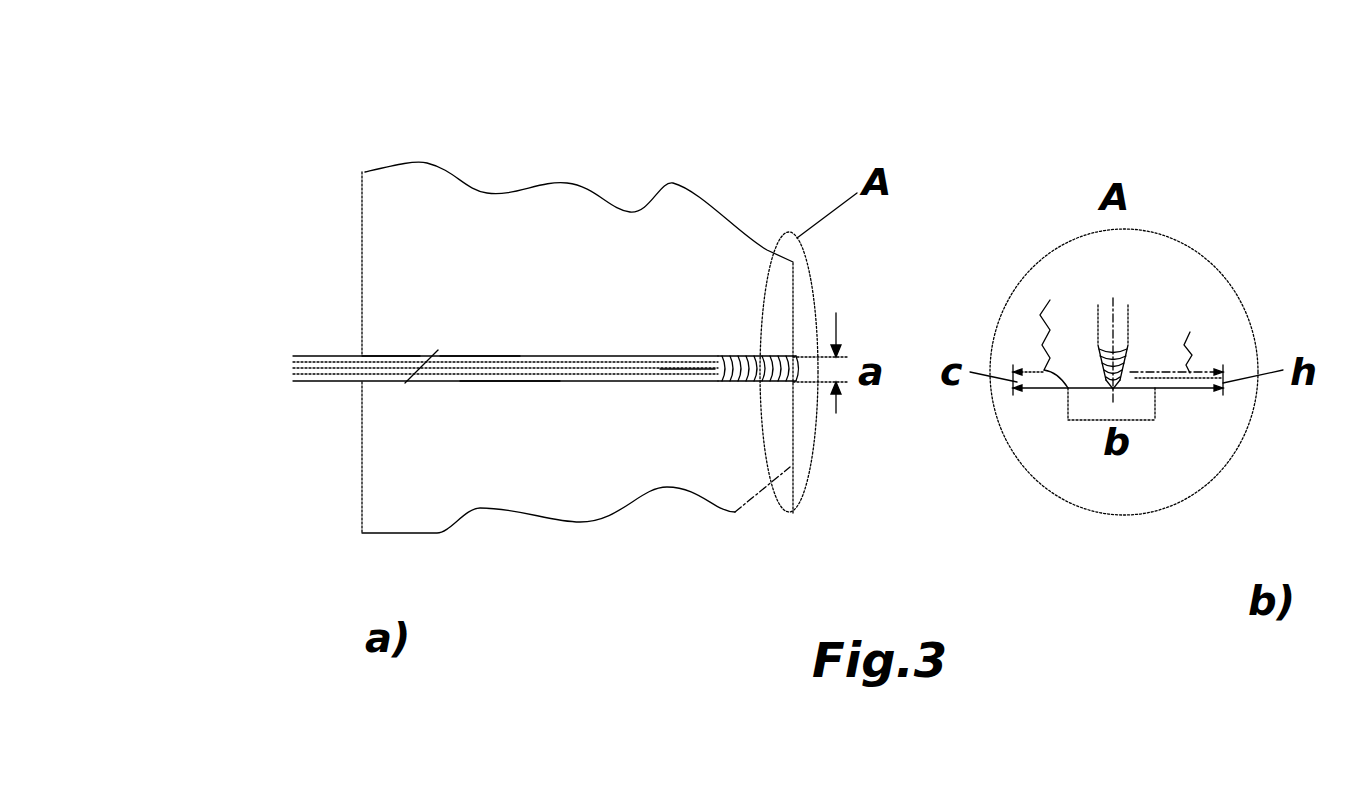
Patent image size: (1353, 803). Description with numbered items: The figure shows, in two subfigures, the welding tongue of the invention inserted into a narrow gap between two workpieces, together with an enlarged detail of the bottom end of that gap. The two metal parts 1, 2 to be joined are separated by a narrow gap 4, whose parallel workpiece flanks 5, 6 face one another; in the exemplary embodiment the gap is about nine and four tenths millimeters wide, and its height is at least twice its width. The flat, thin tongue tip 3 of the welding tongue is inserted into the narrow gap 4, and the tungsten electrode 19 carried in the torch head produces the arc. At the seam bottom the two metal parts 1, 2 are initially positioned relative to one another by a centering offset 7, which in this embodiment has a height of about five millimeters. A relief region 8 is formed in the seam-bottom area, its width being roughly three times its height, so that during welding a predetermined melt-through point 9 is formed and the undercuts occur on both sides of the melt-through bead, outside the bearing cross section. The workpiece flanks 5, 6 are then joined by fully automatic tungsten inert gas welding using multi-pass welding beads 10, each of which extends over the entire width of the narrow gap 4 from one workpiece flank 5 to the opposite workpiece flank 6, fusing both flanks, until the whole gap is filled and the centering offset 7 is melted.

The metal part 1 is at (408, 213).
The metal part 2 is at (408, 472).
The tongue tip 3 is at (322, 362).
The narrow gap 4 is at (385, 358).
The workpiece flank 5 is at (477, 355).
The workpiece flank 6 is at (508, 385).
The centering offset 7 is at (1113, 388).
The relief region 8 is at (1085, 382).
The melt-through point 9 is at (1118, 388).
The welding bead 10 is at (740, 383).
The tungsten electrode 19 is at (690, 372).